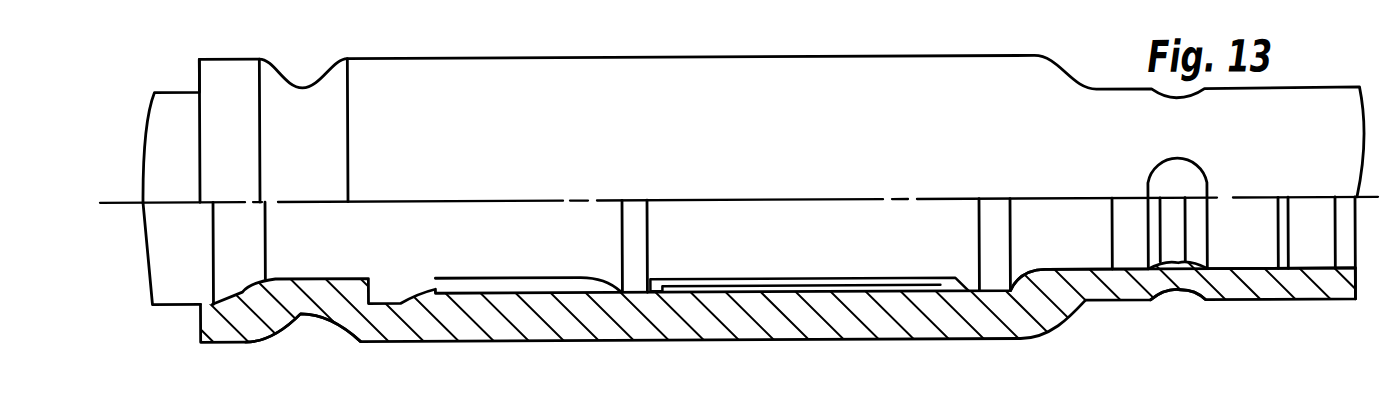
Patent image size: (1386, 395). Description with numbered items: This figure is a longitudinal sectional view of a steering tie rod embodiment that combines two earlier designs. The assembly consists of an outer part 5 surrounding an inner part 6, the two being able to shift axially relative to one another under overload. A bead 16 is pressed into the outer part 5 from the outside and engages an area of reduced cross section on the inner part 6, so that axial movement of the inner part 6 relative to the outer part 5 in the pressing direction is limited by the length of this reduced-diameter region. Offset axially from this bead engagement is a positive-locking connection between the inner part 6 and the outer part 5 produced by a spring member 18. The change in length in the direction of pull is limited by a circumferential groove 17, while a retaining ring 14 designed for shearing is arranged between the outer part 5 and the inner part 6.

The outer part 5 is at (560, 313).
The inner part 6 is at (490, 243).
The retaining ring 14 is at (1170, 224).
The bead 16 is at (1180, 299).
The circumferential groove 17 is at (300, 312).
The spring member 18 is at (795, 280).